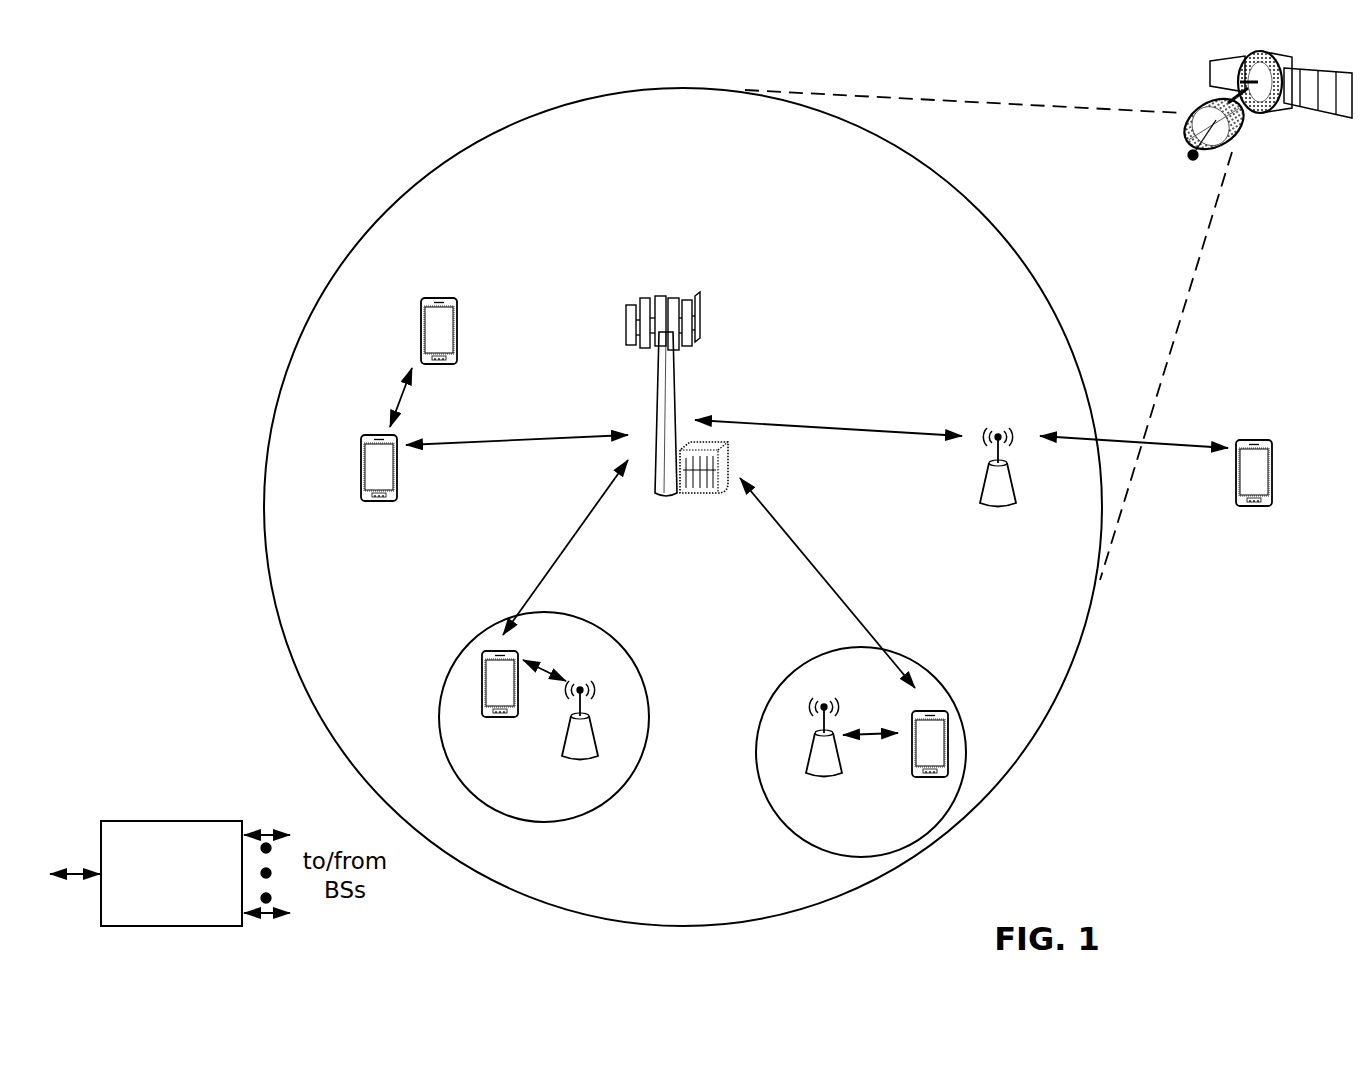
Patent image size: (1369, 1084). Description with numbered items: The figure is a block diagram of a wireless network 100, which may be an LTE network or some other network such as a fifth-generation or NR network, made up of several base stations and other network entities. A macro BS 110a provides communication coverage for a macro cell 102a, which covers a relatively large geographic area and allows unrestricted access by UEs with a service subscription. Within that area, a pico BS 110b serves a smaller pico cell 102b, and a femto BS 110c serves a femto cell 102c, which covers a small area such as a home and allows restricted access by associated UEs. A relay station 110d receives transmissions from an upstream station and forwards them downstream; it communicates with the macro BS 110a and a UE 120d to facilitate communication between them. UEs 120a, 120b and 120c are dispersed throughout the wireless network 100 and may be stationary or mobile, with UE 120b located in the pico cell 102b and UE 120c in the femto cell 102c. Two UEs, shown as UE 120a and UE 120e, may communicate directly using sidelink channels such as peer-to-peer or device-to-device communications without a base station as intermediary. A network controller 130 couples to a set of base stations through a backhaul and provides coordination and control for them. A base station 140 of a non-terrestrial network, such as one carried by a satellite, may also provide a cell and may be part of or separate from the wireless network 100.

The wireless network 100 is at (152, 82).
The macro cell 102a is at (961, 195).
The pico cell 102b is at (634, 656).
The femto cell 102c is at (800, 666).
The macro BS 110a is at (672, 290).
The pico BS 110b is at (600, 752).
The femto BS 110c is at (808, 766).
The relay station 110d is at (999, 428).
The UE 120a is at (359, 470).
The UE 120b is at (492, 719).
The UE 120c is at (915, 778).
The UE 120d is at (1264, 438).
The UE 120e is at (420, 320).
The network controller 130 is at (172, 820).
The base station of a non-terrestrial network 140 is at (1314, 160).